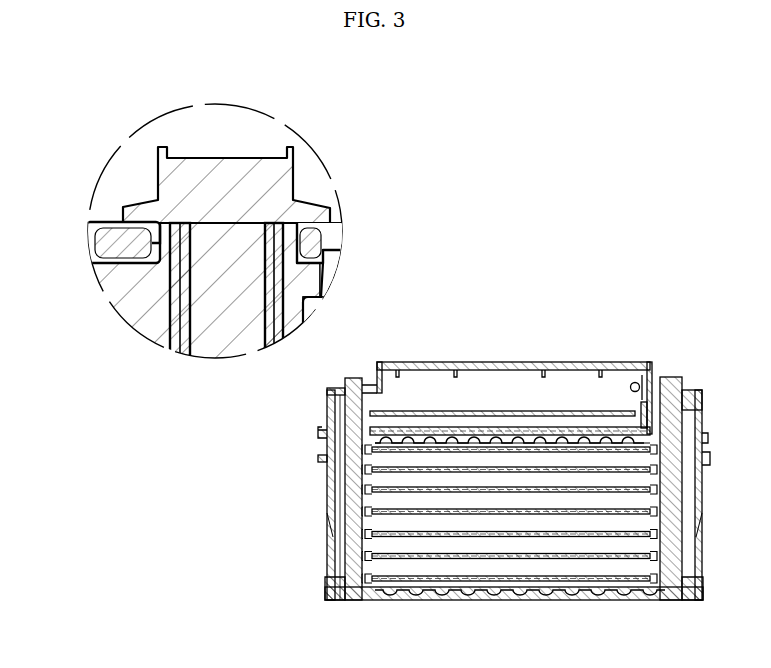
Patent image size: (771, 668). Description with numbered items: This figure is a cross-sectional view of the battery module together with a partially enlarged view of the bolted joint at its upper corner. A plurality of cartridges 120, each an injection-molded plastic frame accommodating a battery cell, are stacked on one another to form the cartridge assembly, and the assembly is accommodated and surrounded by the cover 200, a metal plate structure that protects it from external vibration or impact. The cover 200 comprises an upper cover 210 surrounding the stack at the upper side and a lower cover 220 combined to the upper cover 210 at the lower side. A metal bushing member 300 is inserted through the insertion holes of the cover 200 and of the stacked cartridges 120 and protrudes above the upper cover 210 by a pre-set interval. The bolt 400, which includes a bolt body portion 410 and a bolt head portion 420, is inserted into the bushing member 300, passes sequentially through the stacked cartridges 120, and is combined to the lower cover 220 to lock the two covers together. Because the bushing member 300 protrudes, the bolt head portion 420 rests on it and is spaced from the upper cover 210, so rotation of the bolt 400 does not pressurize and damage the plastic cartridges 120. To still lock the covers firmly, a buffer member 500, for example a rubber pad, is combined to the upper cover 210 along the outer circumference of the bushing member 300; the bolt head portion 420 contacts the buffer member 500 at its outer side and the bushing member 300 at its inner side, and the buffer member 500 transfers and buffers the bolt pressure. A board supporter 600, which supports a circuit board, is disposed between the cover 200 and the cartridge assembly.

The cartridge 120 is at (366, 456).
The cover 200 is at (112, 194).
The upper cover 210 is at (118, 288).
The lower cover 220 is at (340, 599).
The bushing member 300 is at (174, 352).
The bolt 400 is at (303, 113).
The bolt body portion 410 is at (223, 318).
The bolt head portion 420 is at (221, 170).
The buffer member 500 is at (98, 224).
The board supporter 600 is at (321, 436).